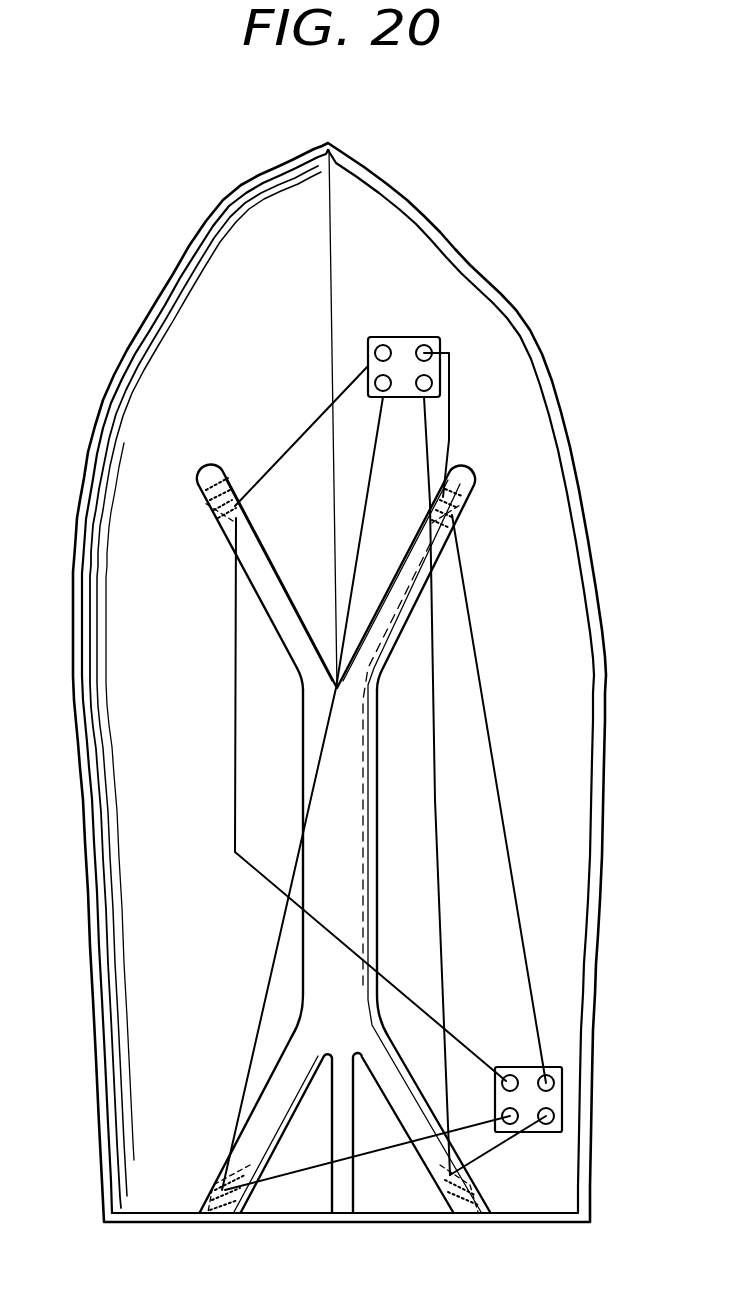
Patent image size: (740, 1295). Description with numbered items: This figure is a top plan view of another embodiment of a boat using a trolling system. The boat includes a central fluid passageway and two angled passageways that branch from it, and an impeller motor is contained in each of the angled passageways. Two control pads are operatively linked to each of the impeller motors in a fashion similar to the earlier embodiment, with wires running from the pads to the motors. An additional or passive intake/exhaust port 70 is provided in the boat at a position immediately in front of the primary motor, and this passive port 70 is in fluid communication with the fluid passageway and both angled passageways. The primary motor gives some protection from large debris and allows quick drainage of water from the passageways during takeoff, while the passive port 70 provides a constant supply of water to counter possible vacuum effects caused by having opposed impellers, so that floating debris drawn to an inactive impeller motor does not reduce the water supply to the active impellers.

The passive intake/exhaust port 70 is at (355, 1176).